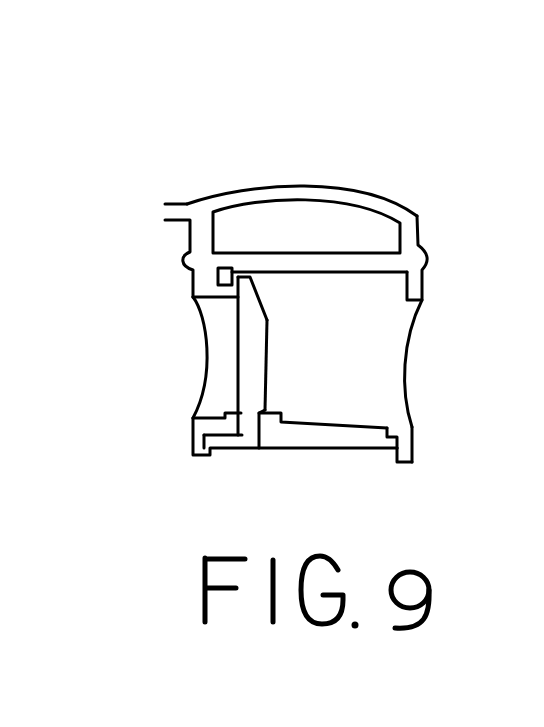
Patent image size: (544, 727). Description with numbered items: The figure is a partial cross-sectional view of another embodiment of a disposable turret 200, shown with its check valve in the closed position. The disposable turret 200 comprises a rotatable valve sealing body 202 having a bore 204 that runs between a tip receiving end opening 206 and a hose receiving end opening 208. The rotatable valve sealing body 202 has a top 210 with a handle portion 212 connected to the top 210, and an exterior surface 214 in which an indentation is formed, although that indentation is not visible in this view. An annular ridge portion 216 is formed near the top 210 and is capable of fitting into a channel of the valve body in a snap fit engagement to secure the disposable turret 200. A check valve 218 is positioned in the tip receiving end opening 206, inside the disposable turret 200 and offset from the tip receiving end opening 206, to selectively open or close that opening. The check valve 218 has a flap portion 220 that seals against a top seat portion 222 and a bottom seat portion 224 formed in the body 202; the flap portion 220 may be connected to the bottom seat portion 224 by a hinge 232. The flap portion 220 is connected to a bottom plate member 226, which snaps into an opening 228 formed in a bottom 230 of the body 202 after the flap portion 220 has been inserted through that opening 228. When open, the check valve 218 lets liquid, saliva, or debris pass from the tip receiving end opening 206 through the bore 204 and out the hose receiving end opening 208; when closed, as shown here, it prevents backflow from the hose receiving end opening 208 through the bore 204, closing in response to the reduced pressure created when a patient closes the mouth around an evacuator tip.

The disposable turret 200 is at (286, 96).
The rotatable valve sealing body 202 is at (411, 167).
The bore 204 is at (378, 370).
The tip receiving end opening 206 is at (200, 340).
The hose receiving end opening 208 is at (410, 337).
The top 210 is at (258, 188).
The handle portion 212 is at (172, 205).
The exterior surface 214 is at (193, 282).
The annular ridge portion 216 is at (427, 253).
The check valve 218 is at (284, 324).
The flap portion 220 is at (268, 363).
The top seat portion 222 is at (231, 281).
The bottom seat portion 224 is at (232, 413).
The bottom plate member 226 is at (300, 437).
The opening 228 is at (412, 433).
The bottom 230 is at (403, 462).
The hinge 232 is at (265, 410).